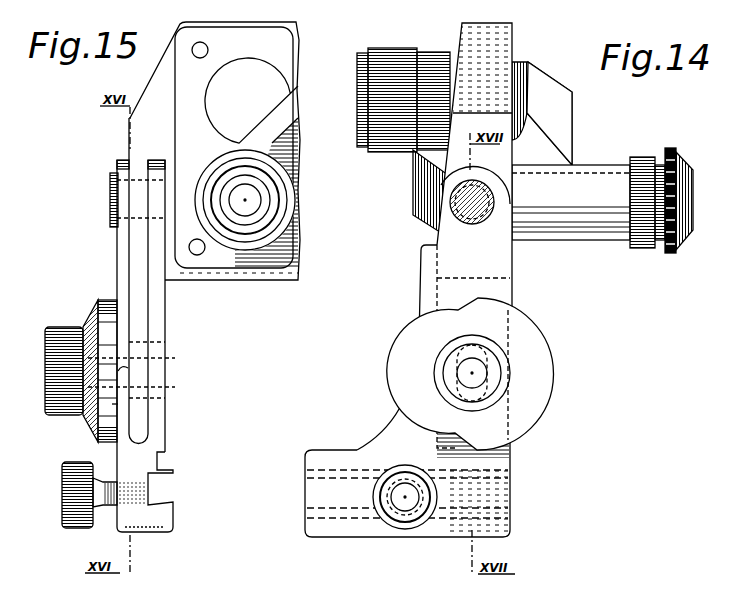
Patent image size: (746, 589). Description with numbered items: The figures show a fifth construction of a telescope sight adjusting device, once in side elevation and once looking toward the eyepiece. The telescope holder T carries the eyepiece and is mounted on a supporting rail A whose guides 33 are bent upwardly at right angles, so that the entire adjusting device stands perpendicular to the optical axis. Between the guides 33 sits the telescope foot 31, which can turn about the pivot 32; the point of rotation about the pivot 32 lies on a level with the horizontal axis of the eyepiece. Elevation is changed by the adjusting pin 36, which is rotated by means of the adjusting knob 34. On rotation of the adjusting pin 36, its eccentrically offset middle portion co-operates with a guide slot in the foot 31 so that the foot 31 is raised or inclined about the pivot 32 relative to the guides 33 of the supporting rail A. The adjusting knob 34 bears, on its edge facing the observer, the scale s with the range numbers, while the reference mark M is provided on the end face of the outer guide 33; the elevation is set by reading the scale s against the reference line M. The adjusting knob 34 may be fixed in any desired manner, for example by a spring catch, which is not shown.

In FIG. 15, the telescope mounting block T is at (297, 22).
In FIG. 14, the telescope mounting block T is at (512, 30).
In FIG. 15, the telescope foot 31 is at (140, 322).
In FIG. 15, the pivot 32 is at (110, 200).
In FIG. 14, the pivot 32 is at (455, 199).
In FIG. 15, the guides 33 is at (117, 271).
In FIG. 14, the guides 33 is at (498, 264).
In FIG. 15, the adjusting knob 34 is at (58, 416).
In FIG. 14, the adjusting knob 34 is at (433, 366).
In FIG. 14, the adjusting pin 36 is at (487, 372).
In FIG. 15, the supporting rail A is at (160, 462).
In FIG. 14, the supporting rail A is at (335, 455).
In FIG. 15, the reference mark M is at (128, 368).
In FIG. 15, the scale S is at (118, 405).
In FIG. 14, the scale S is at (540, 345).